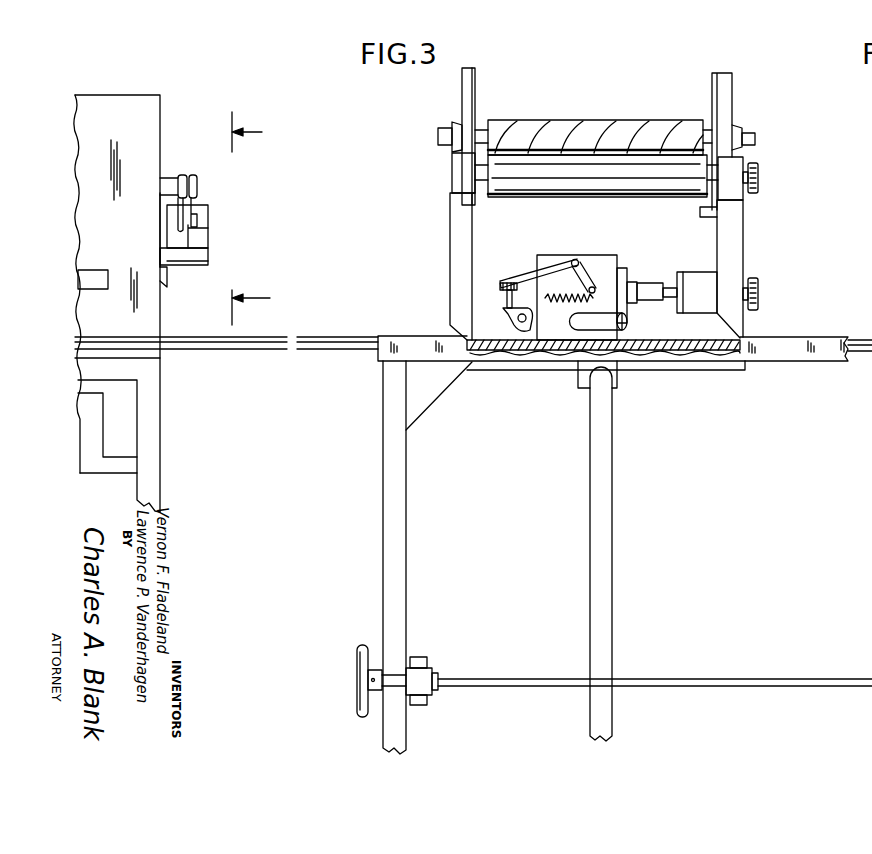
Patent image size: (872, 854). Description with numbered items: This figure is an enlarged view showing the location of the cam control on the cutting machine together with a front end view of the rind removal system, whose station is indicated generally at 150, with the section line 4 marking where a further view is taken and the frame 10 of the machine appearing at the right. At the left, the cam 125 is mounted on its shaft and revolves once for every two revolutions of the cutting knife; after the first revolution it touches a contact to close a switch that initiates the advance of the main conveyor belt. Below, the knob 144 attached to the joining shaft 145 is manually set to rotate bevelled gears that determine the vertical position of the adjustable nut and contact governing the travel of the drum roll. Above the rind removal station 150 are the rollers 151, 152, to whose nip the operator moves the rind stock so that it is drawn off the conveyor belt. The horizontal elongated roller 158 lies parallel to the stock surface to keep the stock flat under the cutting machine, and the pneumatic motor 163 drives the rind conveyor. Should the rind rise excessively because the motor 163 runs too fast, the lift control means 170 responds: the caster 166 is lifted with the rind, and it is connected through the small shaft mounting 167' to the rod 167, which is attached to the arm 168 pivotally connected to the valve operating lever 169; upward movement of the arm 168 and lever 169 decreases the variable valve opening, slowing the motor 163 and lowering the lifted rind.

The section line 4- 4 is at (258, 218).
The machine frame 10 is at (863, 319).
The cam 125 is at (207, 187).
The knob 144 is at (358, 646).
The joining shaft 145 is at (511, 680).
The rind removal station 150 is at (597, 158).
The roller 151 is at (588, 125).
The roller 152 is at (667, 183).
The horizontal elongated roller 158 is at (628, 325).
The pneumatic motor 163 is at (697, 302).
The caster 166 is at (518, 325).
The rod 167 is at (497, 280).
The small shaft mounting 167' is at (530, 354).
The arm 168 is at (522, 278).
The valve operating lever 169 is at (582, 262).
The lift control means 170 is at (513, 268).